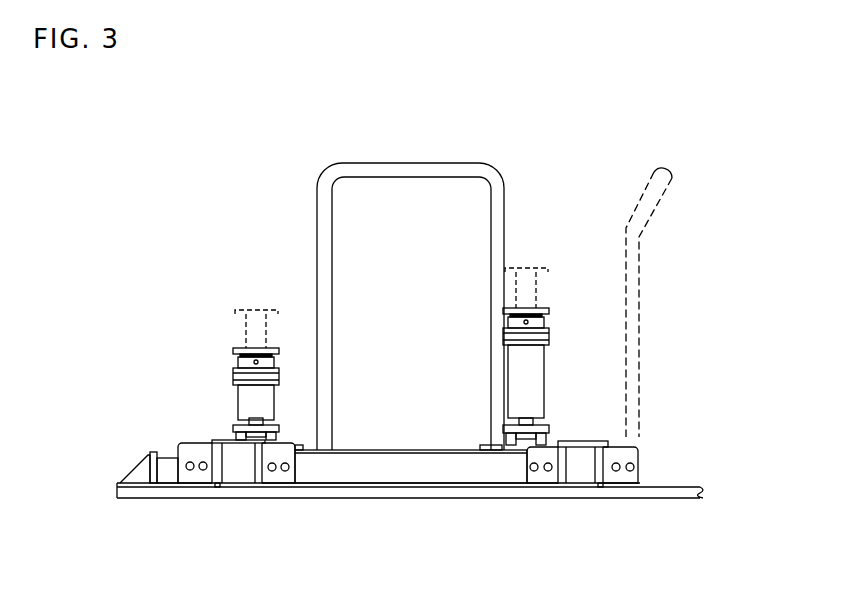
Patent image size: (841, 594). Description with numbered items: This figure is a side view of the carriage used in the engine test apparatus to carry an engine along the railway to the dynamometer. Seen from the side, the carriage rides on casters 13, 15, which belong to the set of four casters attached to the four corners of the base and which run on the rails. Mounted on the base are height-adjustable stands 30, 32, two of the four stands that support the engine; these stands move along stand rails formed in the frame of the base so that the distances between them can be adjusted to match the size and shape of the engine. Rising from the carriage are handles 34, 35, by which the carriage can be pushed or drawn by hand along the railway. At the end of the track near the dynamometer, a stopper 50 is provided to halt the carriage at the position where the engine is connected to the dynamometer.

The caster 13 is at (212, 438).
The caster 15 is at (570, 441).
The stand 30 is at (240, 348).
The stand 32 is at (545, 305).
The handle 34 is at (375, 163).
The handle 35 is at (648, 186).
The stopper 50 is at (153, 455).